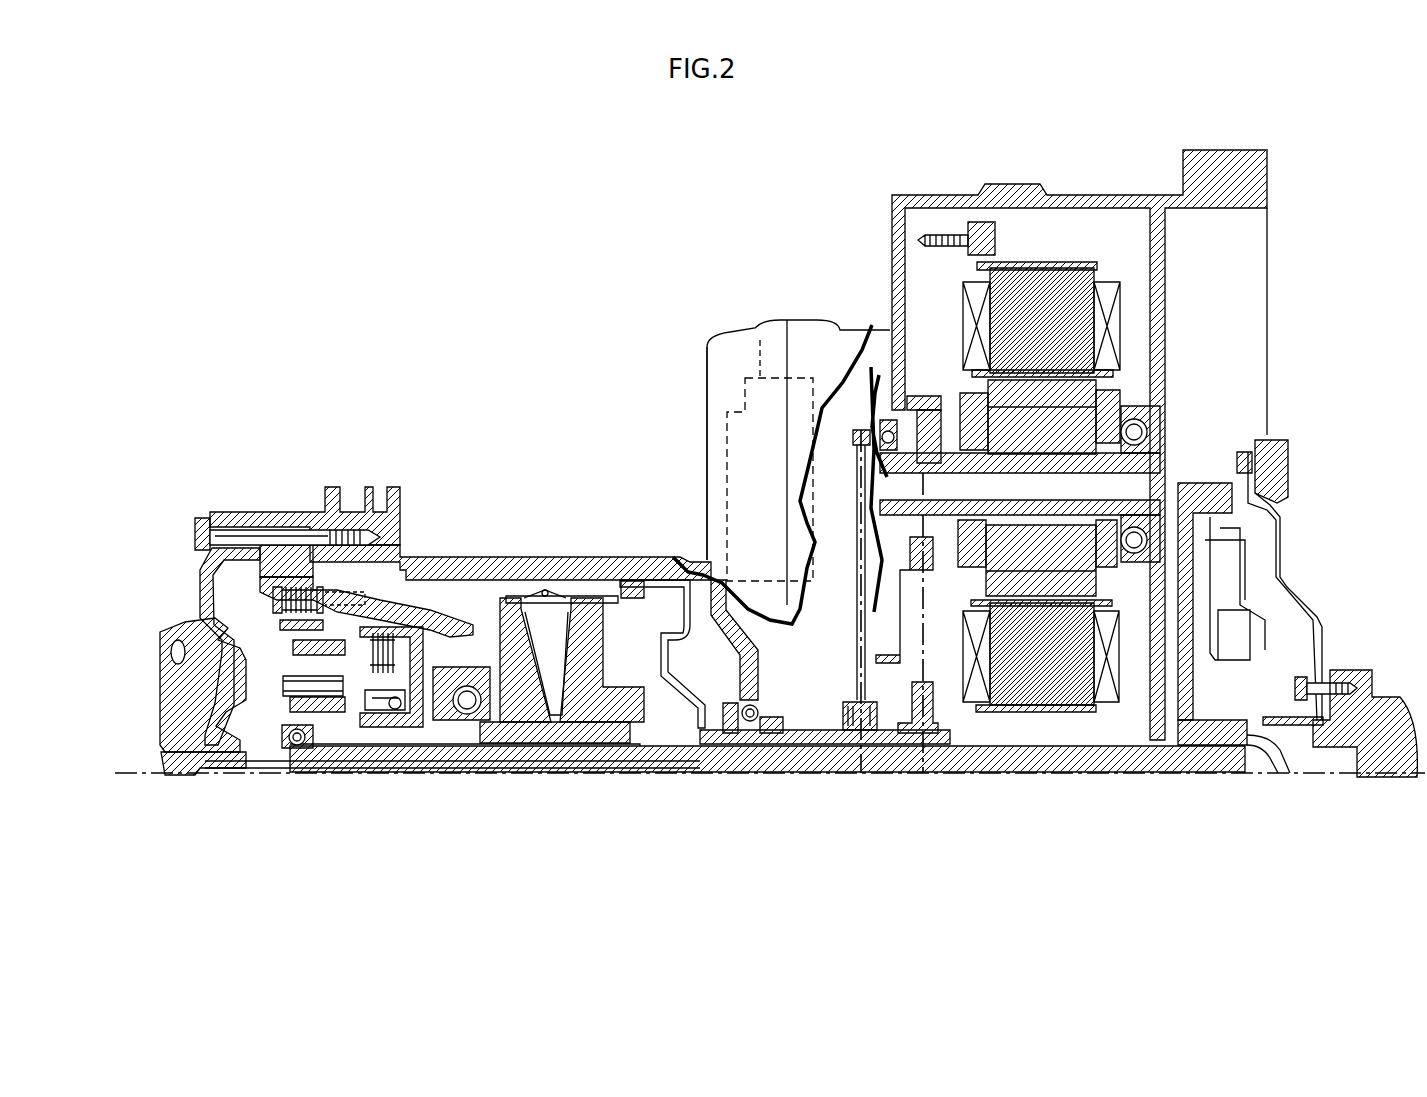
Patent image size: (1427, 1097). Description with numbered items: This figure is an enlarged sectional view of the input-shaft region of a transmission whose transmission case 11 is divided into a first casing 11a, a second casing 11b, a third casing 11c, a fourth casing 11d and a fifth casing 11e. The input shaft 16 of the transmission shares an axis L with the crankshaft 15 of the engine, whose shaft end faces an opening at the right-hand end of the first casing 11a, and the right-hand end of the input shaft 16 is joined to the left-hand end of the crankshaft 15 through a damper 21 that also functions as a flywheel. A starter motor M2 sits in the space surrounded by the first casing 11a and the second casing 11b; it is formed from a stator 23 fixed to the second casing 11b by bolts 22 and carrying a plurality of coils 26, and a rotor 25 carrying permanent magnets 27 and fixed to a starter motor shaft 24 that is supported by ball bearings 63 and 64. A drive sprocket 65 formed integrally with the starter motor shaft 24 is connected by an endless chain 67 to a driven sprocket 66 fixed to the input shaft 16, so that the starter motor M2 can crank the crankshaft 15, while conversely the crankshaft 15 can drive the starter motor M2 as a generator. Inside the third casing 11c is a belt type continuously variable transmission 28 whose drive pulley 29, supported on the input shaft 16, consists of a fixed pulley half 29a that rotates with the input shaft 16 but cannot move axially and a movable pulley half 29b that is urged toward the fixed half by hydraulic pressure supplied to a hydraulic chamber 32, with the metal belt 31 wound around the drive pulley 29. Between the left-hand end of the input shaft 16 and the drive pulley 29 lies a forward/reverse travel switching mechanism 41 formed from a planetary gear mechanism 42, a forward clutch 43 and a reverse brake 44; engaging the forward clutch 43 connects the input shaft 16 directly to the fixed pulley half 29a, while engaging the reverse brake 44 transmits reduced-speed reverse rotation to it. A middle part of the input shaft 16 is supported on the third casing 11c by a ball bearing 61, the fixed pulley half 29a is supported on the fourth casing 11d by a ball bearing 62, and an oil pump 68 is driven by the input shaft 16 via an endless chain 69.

The transmission case 11 is at (700, 388).
The first casing 11a is at (1095, 195).
The second casing 11b is at (800, 325).
The third casing 11c is at (635, 557).
The fourth casing 11d is at (280, 512).
The fifth casing 11e is at (247, 518).
The crankshaft 15 is at (1378, 690).
The input shaft 16 is at (770, 773).
The damper 21 is at (1290, 565).
The bolts 22 is at (992, 240).
The stator 23 is at (1092, 272).
The starter motor shaft 24 is at (1162, 472).
The rotor 25 is at (1110, 388).
The coils 26 is at (1105, 295).
The permanent magnets 27 is at (1060, 400).
The belt type continuously variable transmission 28 is at (490, 590).
The drive pulley 29 is at (570, 572).
The fixed pulley half 29a is at (517, 598).
The movable pulley half 29b is at (582, 598).
The metal belt 31 is at (546, 612).
The hydraulic chamber 32 is at (648, 663).
The forward/reverse travel switching mechanism 41 is at (255, 615).
The planetary gear mechanism 42 is at (278, 690).
The forward clutch 43 is at (408, 630).
The reverse brake 44 is at (342, 575).
The ball bearing 61 is at (760, 710).
The ball bearing 62 is at (467, 715).
The ball bearing 63 is at (1140, 420).
The ball bearing 64 is at (860, 430).
The drive sprocket 65 is at (940, 565).
The driven sprocket 66 is at (938, 690).
The endless chain 67 is at (918, 396).
The oil pump 68 is at (760, 378).
The endless chain 69 is at (797, 520).
The axis L is at (568, 778).
The starter motor M2 is at (1101, 463).